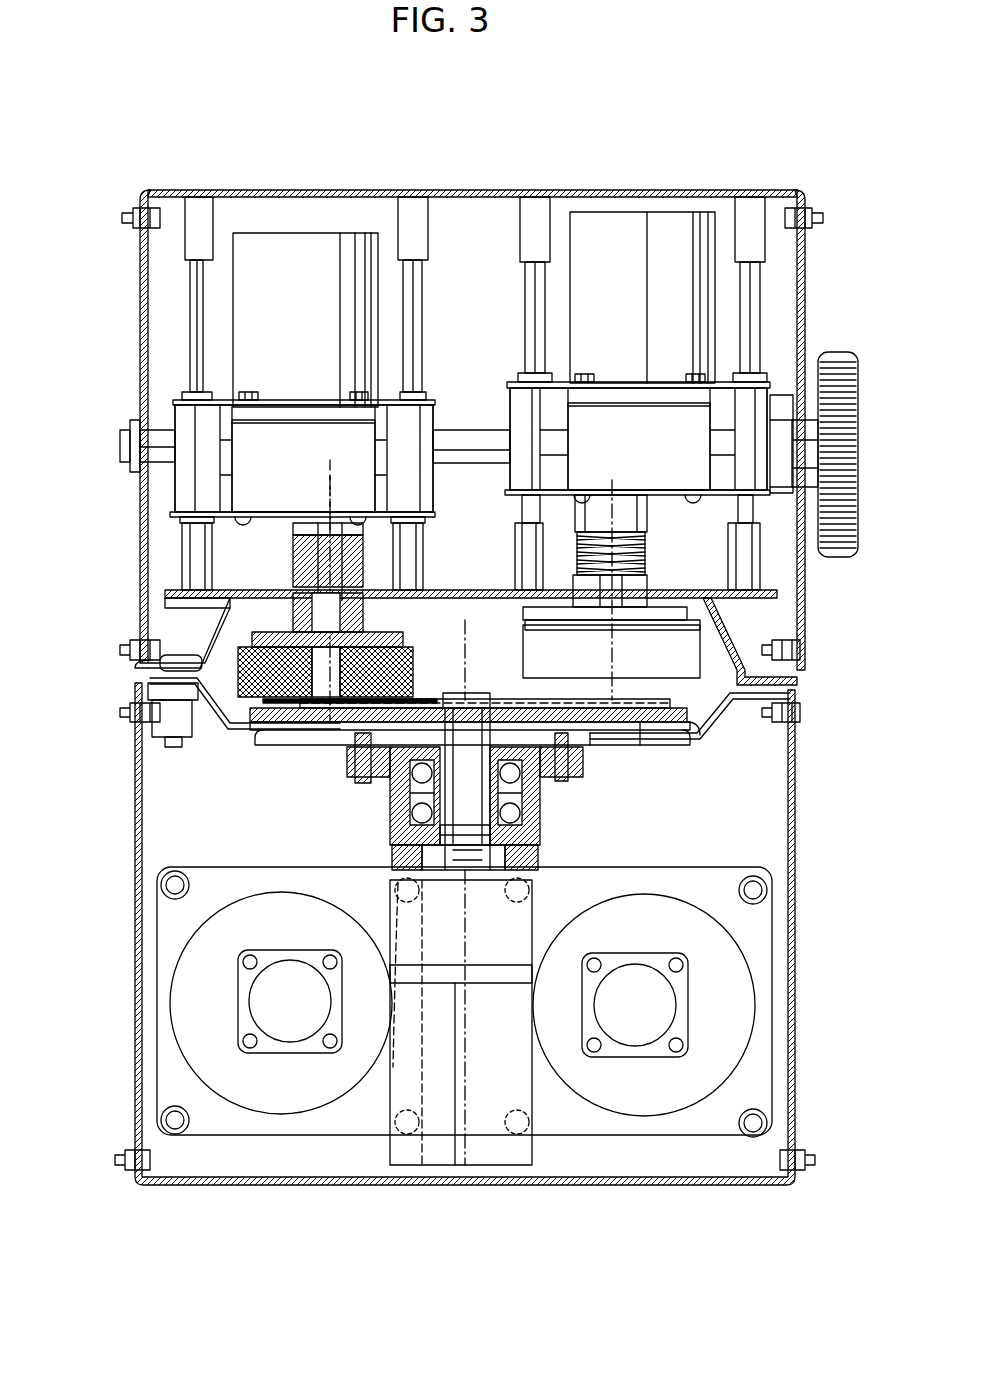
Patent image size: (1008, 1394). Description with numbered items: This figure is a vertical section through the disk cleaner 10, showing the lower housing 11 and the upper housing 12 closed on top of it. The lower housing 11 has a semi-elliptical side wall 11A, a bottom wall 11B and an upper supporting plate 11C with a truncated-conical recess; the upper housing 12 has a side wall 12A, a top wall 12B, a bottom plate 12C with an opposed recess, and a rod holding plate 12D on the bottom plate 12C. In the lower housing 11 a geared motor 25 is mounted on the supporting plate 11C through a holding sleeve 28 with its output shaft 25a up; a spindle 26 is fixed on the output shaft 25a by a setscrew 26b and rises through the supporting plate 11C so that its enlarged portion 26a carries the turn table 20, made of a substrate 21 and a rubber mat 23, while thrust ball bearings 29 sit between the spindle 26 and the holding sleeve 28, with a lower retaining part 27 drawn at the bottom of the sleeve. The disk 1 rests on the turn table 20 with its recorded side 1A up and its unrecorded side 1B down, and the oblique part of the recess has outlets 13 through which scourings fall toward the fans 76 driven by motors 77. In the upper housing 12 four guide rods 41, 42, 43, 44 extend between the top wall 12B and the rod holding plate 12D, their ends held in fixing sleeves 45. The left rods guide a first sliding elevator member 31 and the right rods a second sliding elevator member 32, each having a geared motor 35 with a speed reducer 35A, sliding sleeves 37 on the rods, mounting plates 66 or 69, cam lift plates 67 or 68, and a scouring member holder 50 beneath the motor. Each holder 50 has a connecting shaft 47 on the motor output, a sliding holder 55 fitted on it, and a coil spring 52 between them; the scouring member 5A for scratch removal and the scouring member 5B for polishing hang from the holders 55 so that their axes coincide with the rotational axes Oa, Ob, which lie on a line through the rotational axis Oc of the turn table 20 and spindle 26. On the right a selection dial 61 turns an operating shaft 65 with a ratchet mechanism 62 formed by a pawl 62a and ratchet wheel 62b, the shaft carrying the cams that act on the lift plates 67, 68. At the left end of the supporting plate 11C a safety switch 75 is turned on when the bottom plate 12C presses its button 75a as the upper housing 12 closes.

The disk cleaner 10 is at (550, 145).
The lower housing 11 is at (797, 815).
The side wall 11A is at (790, 955).
The bottom wall 11B is at (600, 1185).
The upper supporting plate 11C is at (268, 735).
The upper housing 12 is at (805, 258).
The side wall 12A is at (140, 337).
The top wall 12B is at (318, 190).
The bottom plate 12C is at (779, 632).
The rod holding plate 12D is at (777, 598).
The outlets 13 is at (235, 682).
The disk 1 is at (532, 700).
The recorded side 1A is at (640, 705).
The unrecorded side 1B is at (700, 722).
The scouring member for scratch removal 5A is at (413, 662).
The scouring member for polishing 5B is at (537, 650).
The turn table 20 is at (607, 790).
The substrate 21 is at (600, 745).
The rubber mat 23 is at (645, 730).
The geared motor 25 is at (432, 1140).
The output shaft 25a is at (502, 858).
The spindle 26 is at (542, 815).
The enlarged portion 26a is at (362, 745).
The setscrew 26b is at (431, 975).
The lower bearing retainer 27 is at (392, 835).
The holding sleeve 28 is at (542, 790).
The thrust ball bearings 29 is at (395, 822).
The first sliding elevator member 31 is at (290, 398).
The second sliding elevator member 32 is at (622, 380).
The geared motor 35 is at (278, 248).
The speed reducer 35A is at (245, 466).
The sliding sleeves 37 is at (183, 417).
The guide rod 41 is at (195, 307).
The guide rod 42 is at (412, 303).
The guide rod 43 is at (528, 290).
The guide rod 44 is at (755, 295).
The fixing sleeves 45 is at (533, 232).
The connecting shaft 47 is at (297, 545).
The scouring member holder 50 is at (250, 622).
The coil spring 52 is at (300, 570).
The sliding holder 55 is at (362, 600).
The selection dial 61 is at (856, 397).
The ratchet mechanism 62 is at (783, 440).
The pawl 62a is at (790, 458).
The ratchet wheel 62b is at (800, 440).
The operating shaft 65 is at (472, 440).
The first mounting plates 66 is at (222, 398).
The first cam lift plates 67 is at (385, 395).
The second cam lift plates 68 is at (560, 380).
The second mounting plates 69 is at (765, 345).
The safety switch 75 is at (152, 708).
The button 75a is at (162, 663).
The fans 76 is at (170, 1070).
The motors 77 is at (288, 1030).
The rotational axis Oa is at (350, 485).
The rotational axis Ob is at (612, 478).
The rotational axis Oc is at (486, 655).